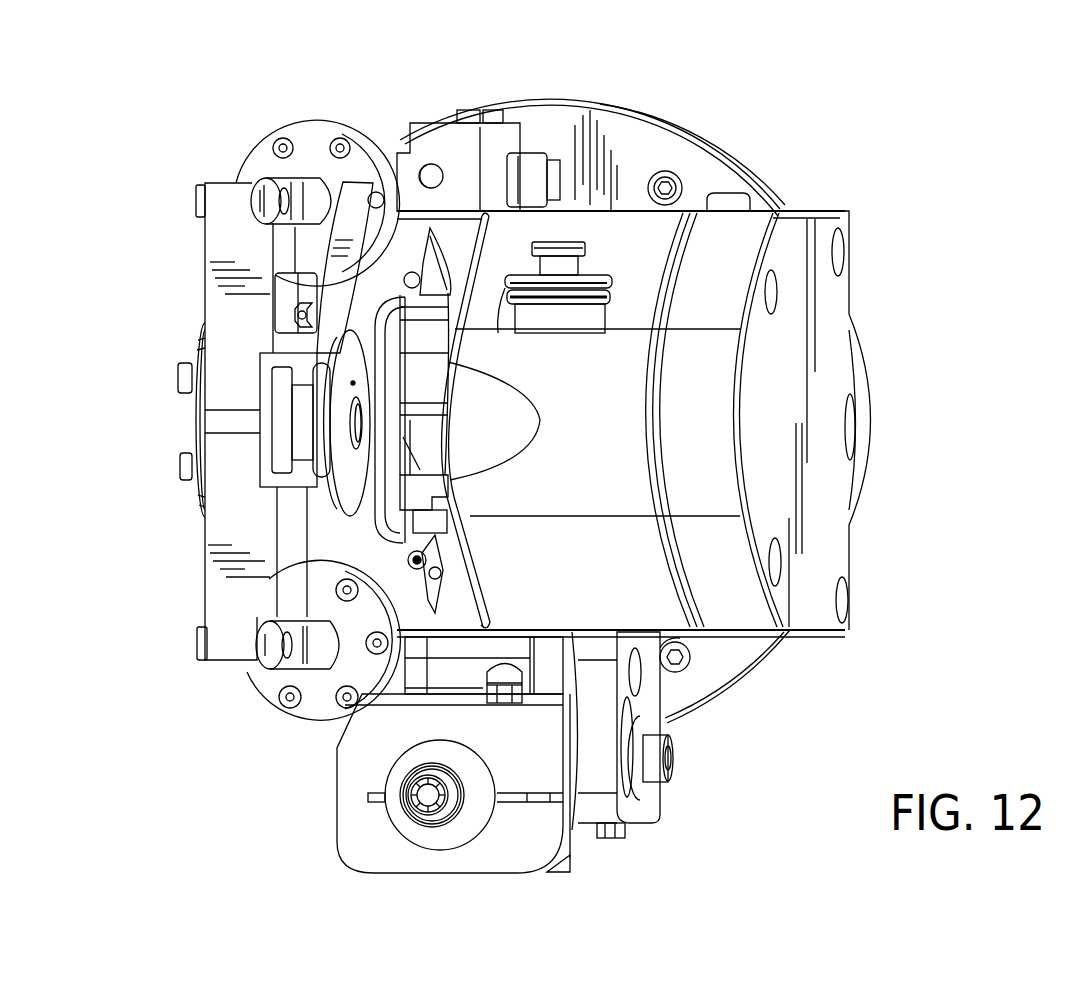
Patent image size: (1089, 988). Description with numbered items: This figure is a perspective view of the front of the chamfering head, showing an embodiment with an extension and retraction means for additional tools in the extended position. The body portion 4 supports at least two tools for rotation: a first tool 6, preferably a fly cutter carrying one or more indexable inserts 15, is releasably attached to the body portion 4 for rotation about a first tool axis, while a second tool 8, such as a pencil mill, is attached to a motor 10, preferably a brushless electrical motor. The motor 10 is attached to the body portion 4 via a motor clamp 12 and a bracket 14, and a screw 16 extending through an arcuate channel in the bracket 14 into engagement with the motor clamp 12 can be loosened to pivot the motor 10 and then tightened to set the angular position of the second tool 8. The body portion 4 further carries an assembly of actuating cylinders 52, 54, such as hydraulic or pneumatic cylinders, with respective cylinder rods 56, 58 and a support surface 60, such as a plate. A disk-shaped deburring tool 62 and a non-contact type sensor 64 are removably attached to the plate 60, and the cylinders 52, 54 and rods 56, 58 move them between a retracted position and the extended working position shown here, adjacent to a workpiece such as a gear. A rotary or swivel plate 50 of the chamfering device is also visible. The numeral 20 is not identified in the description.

The body portion 4 is at (724, 247).
The first tool 6 is at (425, 338).
The second tool 8 is at (413, 802).
The motor 10 is at (447, 838).
The motor clamp 12 is at (517, 845).
The bracket 14 is at (644, 812).
The indexable inserts 15 is at (436, 547).
The screw 16 is at (658, 752).
The strip 20 is at (433, 612).
The swivel plate 50 is at (630, 143).
The actuating cylinder 52 is at (376, 136).
The actuating cylinder 54 is at (313, 708).
The cylinder rod 56 is at (267, 188).
The cylinder rod 58 is at (271, 656).
The support surface 60 is at (235, 592).
The deburring tool 62 is at (356, 483).
The non-contact type sensor 64 is at (293, 310).